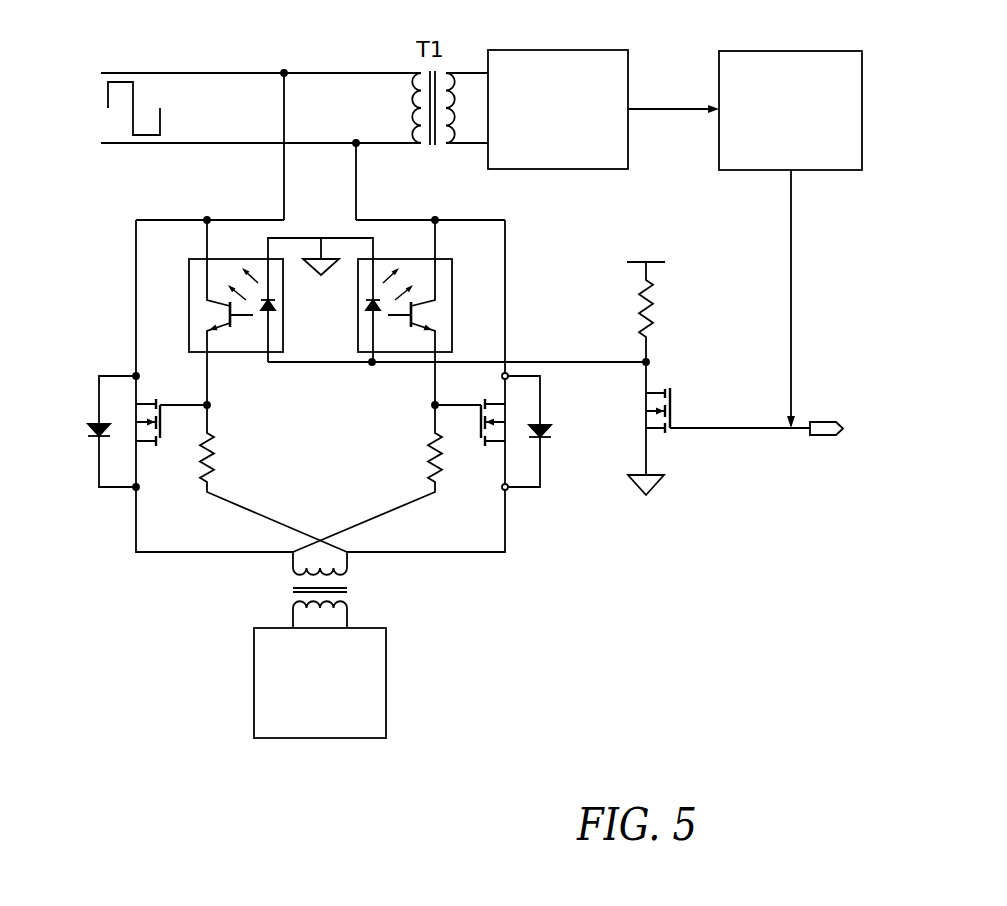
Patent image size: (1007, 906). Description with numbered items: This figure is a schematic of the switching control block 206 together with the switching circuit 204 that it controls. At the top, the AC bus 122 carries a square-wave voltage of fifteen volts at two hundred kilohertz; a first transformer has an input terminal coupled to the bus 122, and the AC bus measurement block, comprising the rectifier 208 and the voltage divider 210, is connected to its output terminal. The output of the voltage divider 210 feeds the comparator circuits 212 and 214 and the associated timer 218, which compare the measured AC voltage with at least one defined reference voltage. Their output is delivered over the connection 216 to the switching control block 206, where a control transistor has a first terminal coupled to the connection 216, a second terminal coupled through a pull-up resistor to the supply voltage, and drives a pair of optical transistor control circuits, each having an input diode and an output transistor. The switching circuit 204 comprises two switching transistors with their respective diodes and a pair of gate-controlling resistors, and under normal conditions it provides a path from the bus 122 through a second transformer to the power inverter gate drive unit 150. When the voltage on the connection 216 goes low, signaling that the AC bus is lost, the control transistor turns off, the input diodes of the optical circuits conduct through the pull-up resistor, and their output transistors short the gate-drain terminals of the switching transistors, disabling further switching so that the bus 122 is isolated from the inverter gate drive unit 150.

The bus 122 is at (224, 103).
The inverter gate drive unit 150 is at (386, 687).
The switching circuit 204 is at (527, 565).
The switching control block 206 is at (643, 510).
The rectifier 208 is at (582, 89).
The voltage divider 210 is at (552, 50).
The comparator circuit 212 is at (844, 90).
The comparator circuit 214 is at (790, 110).
The connection 216 is at (791, 298).
The timer 218 is at (791, 51).